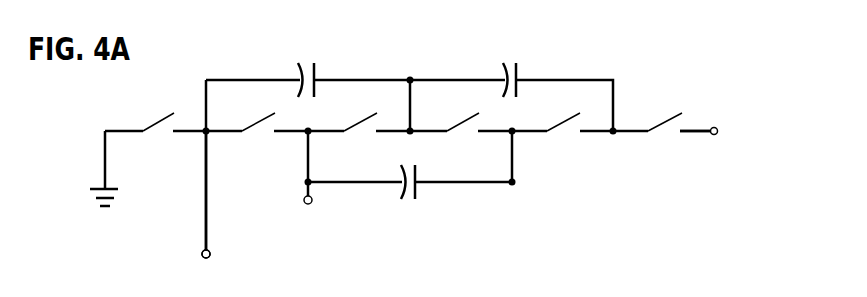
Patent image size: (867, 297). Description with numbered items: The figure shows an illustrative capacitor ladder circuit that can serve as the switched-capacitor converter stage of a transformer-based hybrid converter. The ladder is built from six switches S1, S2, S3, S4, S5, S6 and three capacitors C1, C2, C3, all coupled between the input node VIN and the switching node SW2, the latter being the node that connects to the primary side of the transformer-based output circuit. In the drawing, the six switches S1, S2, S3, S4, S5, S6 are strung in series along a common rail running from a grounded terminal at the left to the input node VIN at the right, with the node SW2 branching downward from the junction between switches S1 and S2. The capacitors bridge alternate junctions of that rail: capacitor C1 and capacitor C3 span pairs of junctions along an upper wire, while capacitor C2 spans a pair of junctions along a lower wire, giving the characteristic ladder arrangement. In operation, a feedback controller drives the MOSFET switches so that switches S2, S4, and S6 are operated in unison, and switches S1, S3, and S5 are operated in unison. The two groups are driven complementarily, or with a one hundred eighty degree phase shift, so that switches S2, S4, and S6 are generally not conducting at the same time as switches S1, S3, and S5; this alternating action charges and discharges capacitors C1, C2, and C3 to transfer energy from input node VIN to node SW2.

The switch S1 is at (155, 140).
The switch S2 is at (257, 140).
The switch S3 is at (359, 140).
The switch S4 is at (461, 140).
The switch S5 is at (562, 140).
The switch S6 is at (661, 140).
The capacitor C1 is at (308, 66).
The capacitor C2 is at (408, 199).
The capacitor C3 is at (509, 66).
The node V_ SW2 is at (235, 209).
The input node VIN is at (719, 118).